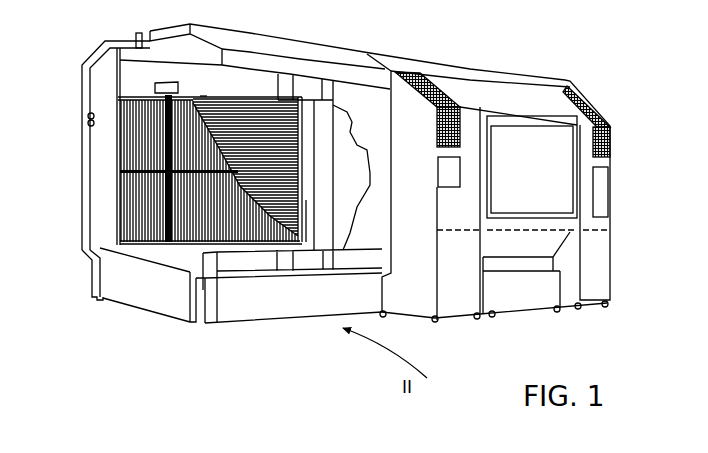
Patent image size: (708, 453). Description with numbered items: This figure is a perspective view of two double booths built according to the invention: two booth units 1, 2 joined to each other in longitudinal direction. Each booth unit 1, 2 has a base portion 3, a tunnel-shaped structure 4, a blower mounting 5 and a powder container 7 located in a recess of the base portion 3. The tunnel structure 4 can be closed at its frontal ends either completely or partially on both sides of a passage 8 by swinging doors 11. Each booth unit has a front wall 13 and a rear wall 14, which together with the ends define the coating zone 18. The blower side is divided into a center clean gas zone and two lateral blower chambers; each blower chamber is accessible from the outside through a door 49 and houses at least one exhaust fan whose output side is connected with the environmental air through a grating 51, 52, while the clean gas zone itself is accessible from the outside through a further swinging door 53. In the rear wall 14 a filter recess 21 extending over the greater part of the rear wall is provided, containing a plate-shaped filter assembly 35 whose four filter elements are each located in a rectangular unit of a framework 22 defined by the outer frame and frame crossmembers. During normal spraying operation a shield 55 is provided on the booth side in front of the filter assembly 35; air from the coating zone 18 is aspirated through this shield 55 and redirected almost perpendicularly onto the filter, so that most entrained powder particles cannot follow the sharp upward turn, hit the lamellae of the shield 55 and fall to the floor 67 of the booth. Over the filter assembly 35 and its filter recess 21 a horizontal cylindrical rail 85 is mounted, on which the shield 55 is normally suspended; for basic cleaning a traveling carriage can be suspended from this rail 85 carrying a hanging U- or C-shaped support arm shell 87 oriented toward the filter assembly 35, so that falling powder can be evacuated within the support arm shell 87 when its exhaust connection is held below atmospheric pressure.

The booth unit 1 is at (335, 40).
The booth unit 2 is at (467, 62).
The base portion 3 is at (168, 318).
The tunnel-shaped structure 4 is at (97, 34).
The blower mounting 5 is at (615, 262).
The powder container 7 is at (530, 313).
The passage 8 is at (146, 32).
The swinging doors 11 is at (153, 85).
The front wall 13 is at (383, 120).
The rear wall 14 is at (85, 202).
The coating zone 18 is at (342, 233).
The filter recess 21 is at (120, 171).
The framework 22 is at (118, 243).
The filter assembly 35 is at (113, 185).
The door 49 is at (600, 198).
The grating 51 is at (437, 137).
The grating 52 is at (413, 98).
The swinging door 53 is at (546, 188).
The shield 55 is at (294, 187).
The floor 67 is at (187, 254).
The rail 85 is at (313, 97).
The support arm shell 87 is at (203, 96).